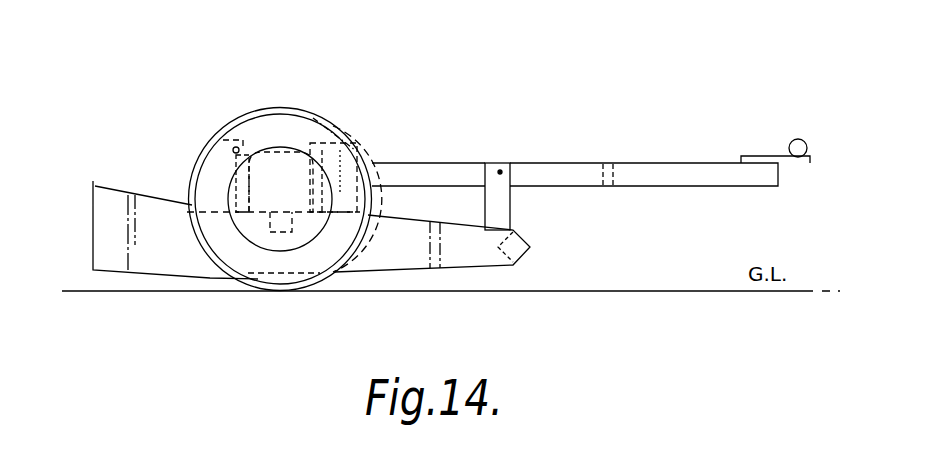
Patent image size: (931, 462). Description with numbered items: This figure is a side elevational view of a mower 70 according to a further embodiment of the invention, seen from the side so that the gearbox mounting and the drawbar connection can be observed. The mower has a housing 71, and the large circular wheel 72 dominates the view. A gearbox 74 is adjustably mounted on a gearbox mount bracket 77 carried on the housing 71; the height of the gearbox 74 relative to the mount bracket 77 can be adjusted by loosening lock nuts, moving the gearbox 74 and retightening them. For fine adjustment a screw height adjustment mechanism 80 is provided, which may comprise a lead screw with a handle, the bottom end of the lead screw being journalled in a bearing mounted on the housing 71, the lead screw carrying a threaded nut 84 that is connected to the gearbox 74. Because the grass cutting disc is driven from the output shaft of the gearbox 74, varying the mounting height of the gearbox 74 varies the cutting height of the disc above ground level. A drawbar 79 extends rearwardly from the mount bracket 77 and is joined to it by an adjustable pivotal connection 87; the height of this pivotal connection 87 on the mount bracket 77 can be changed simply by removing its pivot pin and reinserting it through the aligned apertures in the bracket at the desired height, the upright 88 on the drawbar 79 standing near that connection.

The trailer assembly 70 is at (508, 132).
The housing 71 is at (112, 203).
The wheel tire 72 is at (298, 117).
The gearbox 74 is at (282, 175).
The gearbox mount bracket 77 is at (343, 135).
The drawbar 79 is at (690, 175).
The screw height adjustment mechanism 80 is at (223, 129).
The threaded nut 84 is at (233, 170).
The adjustable pivotal connection 87 is at (368, 166).
The upright support 88 is at (505, 210).